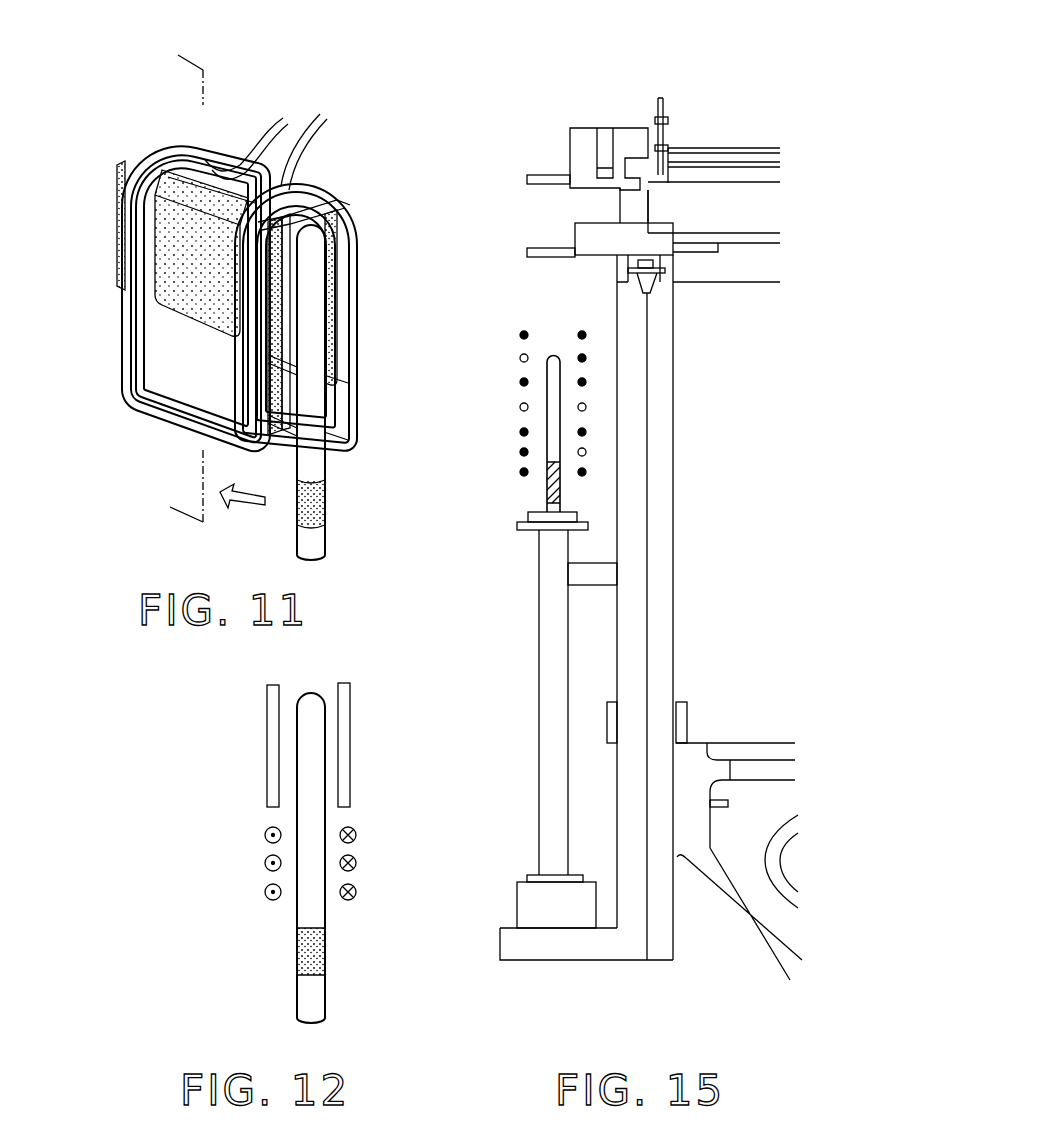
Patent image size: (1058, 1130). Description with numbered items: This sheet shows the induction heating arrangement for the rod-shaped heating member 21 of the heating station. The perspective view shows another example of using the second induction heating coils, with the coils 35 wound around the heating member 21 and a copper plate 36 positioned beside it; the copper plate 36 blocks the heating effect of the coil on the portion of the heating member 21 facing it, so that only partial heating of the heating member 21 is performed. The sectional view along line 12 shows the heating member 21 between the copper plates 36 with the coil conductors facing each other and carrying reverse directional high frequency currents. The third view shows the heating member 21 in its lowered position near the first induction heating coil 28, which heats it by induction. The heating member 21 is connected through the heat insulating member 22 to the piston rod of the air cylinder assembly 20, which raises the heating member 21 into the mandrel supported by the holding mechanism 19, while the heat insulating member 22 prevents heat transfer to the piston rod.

In FIG. 11, the section line 12— 12 is at (173, 281).
In FIG. 15, the holding mechanism 19 is at (580, 140).
In FIG. 15, the air cylinder assembly 20 is at (540, 672).
In FIG. 11, the heating member 21 is at (317, 463).
In FIG. 12, the heating member 21 is at (303, 905).
In FIG. 15, the heating member 21 is at (548, 430).
In FIG. 11, the heat insulating member 22 is at (315, 511).
In FIG. 12, the heat insulating member 22 is at (303, 960).
In FIG. 15, the heat insulating member 22 is at (550, 480).
In FIG. 15, the first induction heating coil 28 is at (520, 358).
In FIG. 11, the coils 35 is at (297, 183).
In FIG. 11, the copper plate 36 is at (117, 213).
In FIG. 12, the copper plate 36 is at (267, 735).